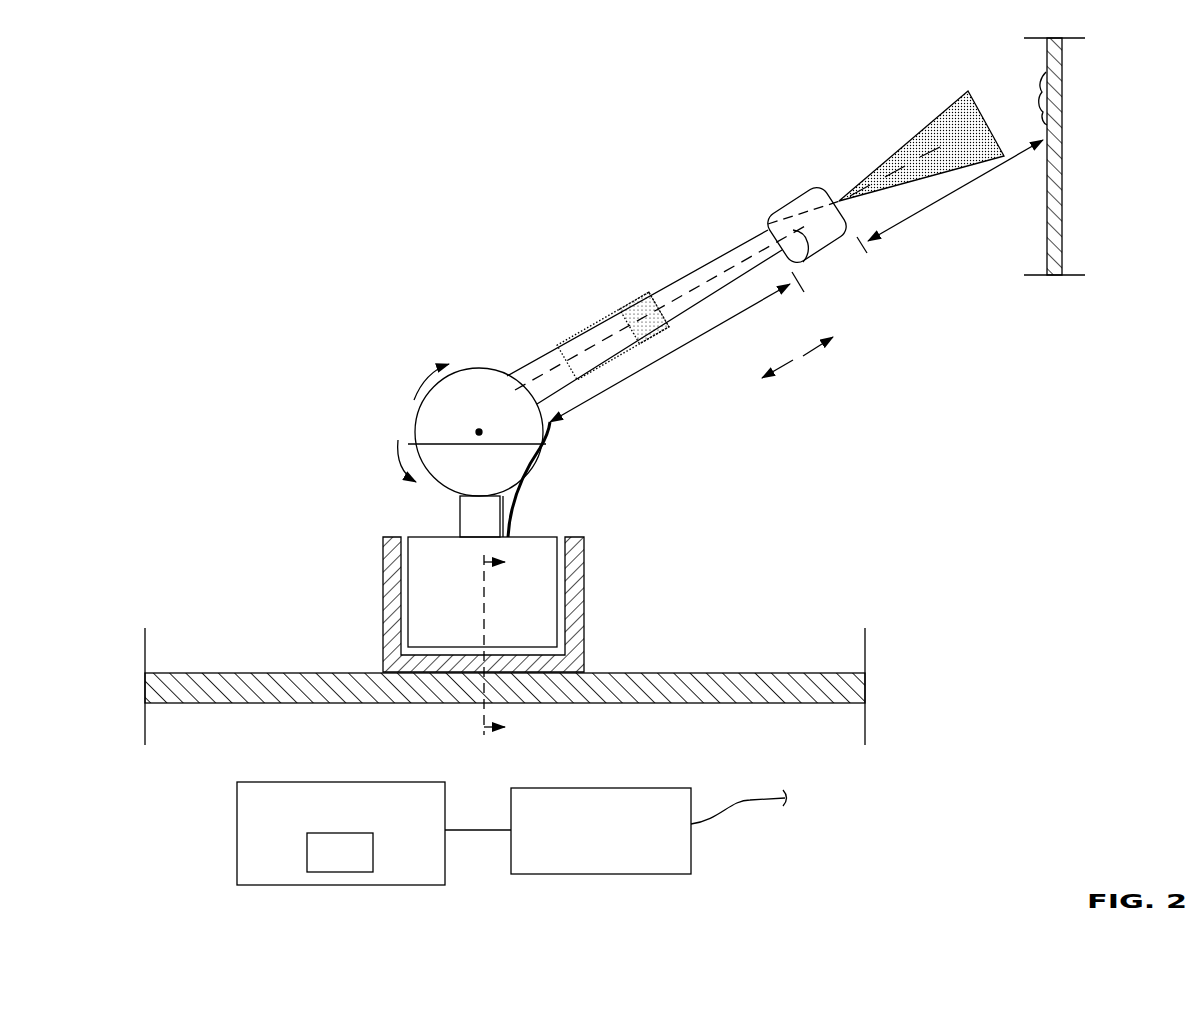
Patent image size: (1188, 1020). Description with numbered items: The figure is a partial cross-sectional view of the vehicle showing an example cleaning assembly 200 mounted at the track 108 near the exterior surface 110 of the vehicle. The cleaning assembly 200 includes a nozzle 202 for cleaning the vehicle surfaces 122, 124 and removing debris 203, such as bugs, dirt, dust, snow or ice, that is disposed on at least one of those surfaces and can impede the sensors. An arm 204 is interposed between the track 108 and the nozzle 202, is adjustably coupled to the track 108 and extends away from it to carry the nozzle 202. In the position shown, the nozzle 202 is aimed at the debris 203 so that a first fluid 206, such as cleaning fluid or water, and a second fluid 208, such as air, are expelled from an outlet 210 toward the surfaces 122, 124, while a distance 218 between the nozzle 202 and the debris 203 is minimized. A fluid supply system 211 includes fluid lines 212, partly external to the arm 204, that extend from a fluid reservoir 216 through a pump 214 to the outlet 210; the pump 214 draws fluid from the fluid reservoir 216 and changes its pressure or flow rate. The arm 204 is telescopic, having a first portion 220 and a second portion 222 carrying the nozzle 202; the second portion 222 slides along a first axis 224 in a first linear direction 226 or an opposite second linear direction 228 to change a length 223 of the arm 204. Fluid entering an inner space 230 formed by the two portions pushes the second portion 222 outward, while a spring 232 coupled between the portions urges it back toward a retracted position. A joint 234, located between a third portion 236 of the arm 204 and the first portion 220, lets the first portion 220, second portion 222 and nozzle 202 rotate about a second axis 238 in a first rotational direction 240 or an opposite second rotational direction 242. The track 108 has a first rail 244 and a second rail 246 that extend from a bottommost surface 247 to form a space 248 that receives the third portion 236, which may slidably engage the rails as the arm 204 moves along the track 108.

The cleaning assembly 200 is at (158, 156).
The nozzle 202 is at (814, 190).
The debris 203 is at (1038, 76).
The arm 204 is at (592, 245).
The first fluid 206 is at (909, 102).
The second fluid 208 is at (932, 123).
The outlet 210 is at (841, 191).
The fluid line 212 is at (510, 512).
The pump 214 is at (690, 874).
The fluid reservoir 216 is at (237, 782).
The distance 218 is at (950, 196).
The first portion 220 is at (590, 323).
The second portion 222 is at (673, 287).
The length 223 is at (668, 354).
The first axis 224 is at (803, 262).
The first linear direction 226 is at (813, 348).
The second linear direction 228 is at (783, 367).
The inner space 230 is at (558, 353).
The spring 232 is at (623, 313).
The joint 234 is at (471, 362).
The third portion 236 is at (482, 592).
The second axis 238 is at (477, 432).
The first rotational direction 240 is at (425, 380).
The second rotational direction 242 is at (397, 458).
The first rail 244 is at (383, 620).
The second rail 246 is at (586, 622).
The bottommost surface 247 is at (403, 657).
The space 248 is at (560, 535).
The track 108 is at (401, 598).
The exterior surface 110 is at (249, 673).
The vehicle surface 122 is at (1084, 179).
The vehicle surface 124 is at (1063, 243).
The fluid supply system 211 is at (184, 869).